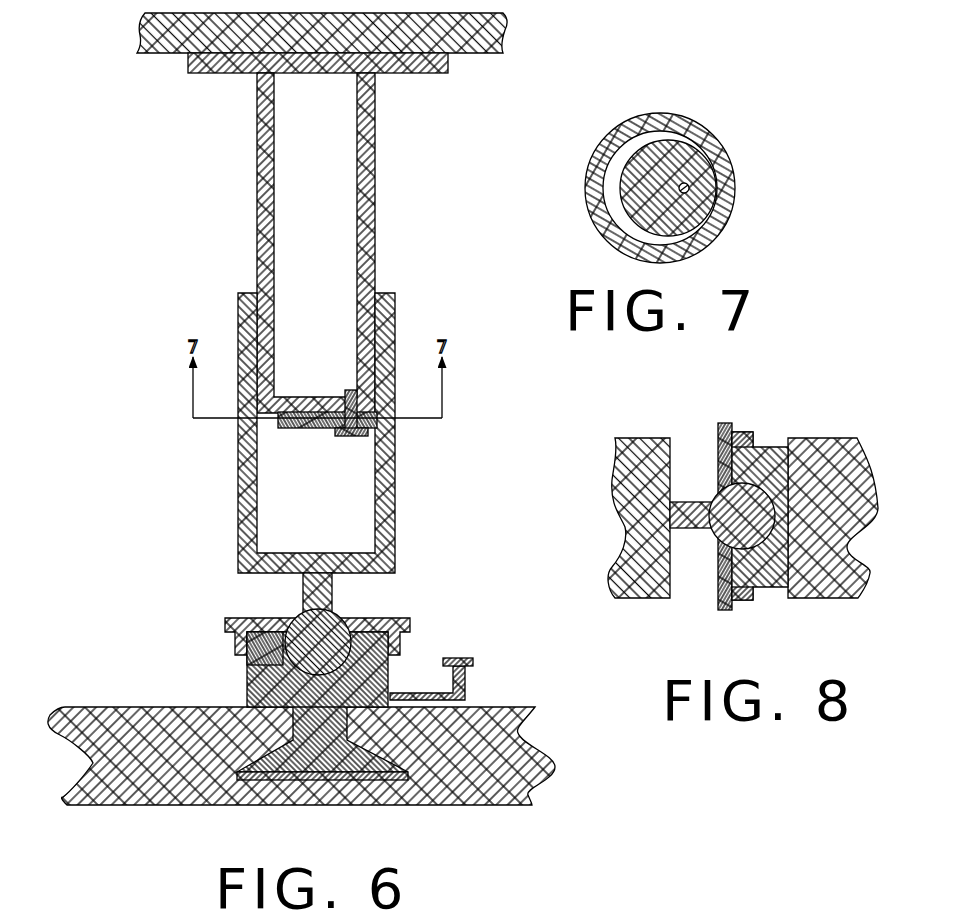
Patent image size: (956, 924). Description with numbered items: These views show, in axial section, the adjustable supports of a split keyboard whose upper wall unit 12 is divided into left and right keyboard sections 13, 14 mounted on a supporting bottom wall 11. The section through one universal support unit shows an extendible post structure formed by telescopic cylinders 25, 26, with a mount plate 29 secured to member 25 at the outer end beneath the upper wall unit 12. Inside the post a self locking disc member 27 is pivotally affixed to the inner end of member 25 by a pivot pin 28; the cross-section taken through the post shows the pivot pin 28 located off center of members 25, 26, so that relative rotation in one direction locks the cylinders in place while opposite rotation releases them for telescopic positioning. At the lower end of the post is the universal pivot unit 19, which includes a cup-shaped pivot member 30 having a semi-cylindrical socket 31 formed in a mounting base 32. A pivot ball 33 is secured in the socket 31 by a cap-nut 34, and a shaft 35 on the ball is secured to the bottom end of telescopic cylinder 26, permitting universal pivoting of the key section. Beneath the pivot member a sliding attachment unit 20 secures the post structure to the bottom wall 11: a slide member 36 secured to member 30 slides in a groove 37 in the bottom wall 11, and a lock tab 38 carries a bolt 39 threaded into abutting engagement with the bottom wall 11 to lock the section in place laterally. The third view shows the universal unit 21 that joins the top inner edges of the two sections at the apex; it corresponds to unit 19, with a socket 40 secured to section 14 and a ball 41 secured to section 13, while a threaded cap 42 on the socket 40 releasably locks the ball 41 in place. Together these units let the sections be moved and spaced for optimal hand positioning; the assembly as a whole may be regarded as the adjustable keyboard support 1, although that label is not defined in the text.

In FIG. 6, the retaining assembly 1 is at (310, 343).
In FIG. 6, the supporting bottom wall 11 is at (525, 733).
In FIG. 6, the upper wall unit 12 is at (477, 55).
In FIG. 8, the left keyboard section 13 is at (655, 437).
In FIG. 8, the right keyboard section 14 is at (798, 437).
In FIG. 6, the universal pivot unit 19 is at (354, 453).
In FIG. 6, the sliding attachment unit 20 is at (308, 774).
In FIG. 8, the universal unit 21 is at (645, 626).
In FIG. 6, the telescopic cylinder 25 is at (254, 213).
In FIG. 6, the telescopic cylinder 26 is at (400, 511).
In FIG. 7, the telescopic cylinder 26 is at (694, 112).
In FIG. 6, the self locking disc member 27 is at (287, 432).
In FIG. 7, the self locking disc member 27 is at (637, 186).
In FIG. 6, the pivot pin 28 is at (350, 434).
In FIG. 7, the pivot pin 28 is at (691, 194).
In FIG. 6, the mount plate 29 is at (410, 77).
In FIG. 6, the cup-shaped pivot member 30 is at (268, 685).
In FIG. 6, the semi-cylindrical socket 31 is at (286, 662).
In FIG. 6, the mounting base 32 is at (393, 672).
In FIG. 6, the pivot ball 33 is at (329, 622).
In FIG. 6, the cap-nut 34 is at (248, 617).
In FIG. 6, the shaft 35 is at (334, 591).
In FIG. 6, the slide member 36 is at (313, 755).
In FIG. 6, the groove 37 is at (250, 783).
In FIG. 6, the lock tab 38 is at (478, 693).
In FIG. 6, the bolt 39 is at (477, 670).
In FIG. 8, the socket 40 is at (776, 592).
In FIG. 8, the ball 41 is at (710, 541).
In FIG. 8, the threaded cap 42 is at (747, 430).